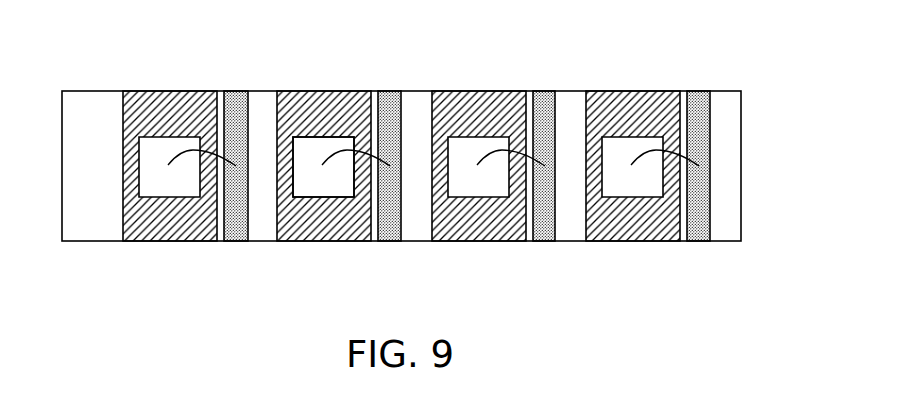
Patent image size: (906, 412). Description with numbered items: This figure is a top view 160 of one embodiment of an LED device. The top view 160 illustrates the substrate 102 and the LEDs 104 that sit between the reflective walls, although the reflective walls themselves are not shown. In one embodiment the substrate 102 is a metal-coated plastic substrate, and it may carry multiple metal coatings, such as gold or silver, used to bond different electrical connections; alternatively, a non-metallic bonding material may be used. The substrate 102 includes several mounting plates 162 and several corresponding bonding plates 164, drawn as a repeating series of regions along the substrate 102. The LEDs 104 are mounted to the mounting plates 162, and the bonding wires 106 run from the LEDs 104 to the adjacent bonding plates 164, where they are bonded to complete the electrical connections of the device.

The top view 160 is at (152, 42).
The substrate 102 is at (102, 232).
The LEDs 104 is at (322, 183).
The bonding wires 106 is at (338, 150).
The mounting plates 162 is at (477, 115).
The bonding plates 164 is at (540, 115).